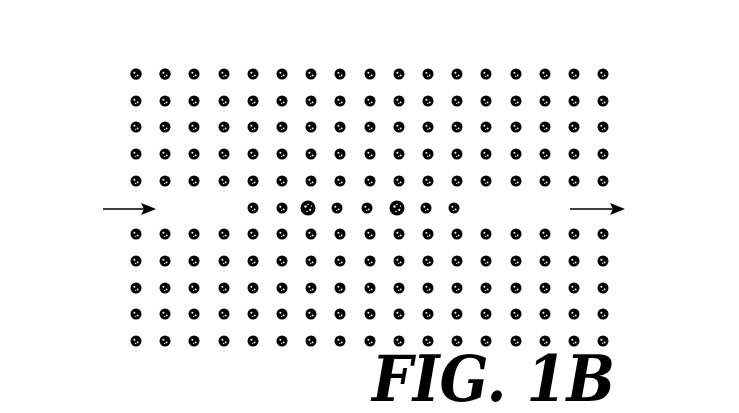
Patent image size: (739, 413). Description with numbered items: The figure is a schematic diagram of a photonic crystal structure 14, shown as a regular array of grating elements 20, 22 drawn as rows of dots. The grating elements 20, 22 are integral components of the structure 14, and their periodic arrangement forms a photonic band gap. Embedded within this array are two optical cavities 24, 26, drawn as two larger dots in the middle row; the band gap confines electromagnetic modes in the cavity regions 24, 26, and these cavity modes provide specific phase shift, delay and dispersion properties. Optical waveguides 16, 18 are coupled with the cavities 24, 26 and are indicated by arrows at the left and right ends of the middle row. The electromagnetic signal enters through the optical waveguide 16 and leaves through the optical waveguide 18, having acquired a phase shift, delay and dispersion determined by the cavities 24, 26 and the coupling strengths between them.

The photonic crystal structure 14 is at (93, 85).
The optical waveguide 16 is at (174, 210).
The optical waveguide 18 is at (544, 211).
The grating element 20 is at (136, 66).
The grating element 22 is at (165, 66).
The embedded optical cavity 24 is at (313, 198).
The embedded optical cavity 26 is at (400, 198).